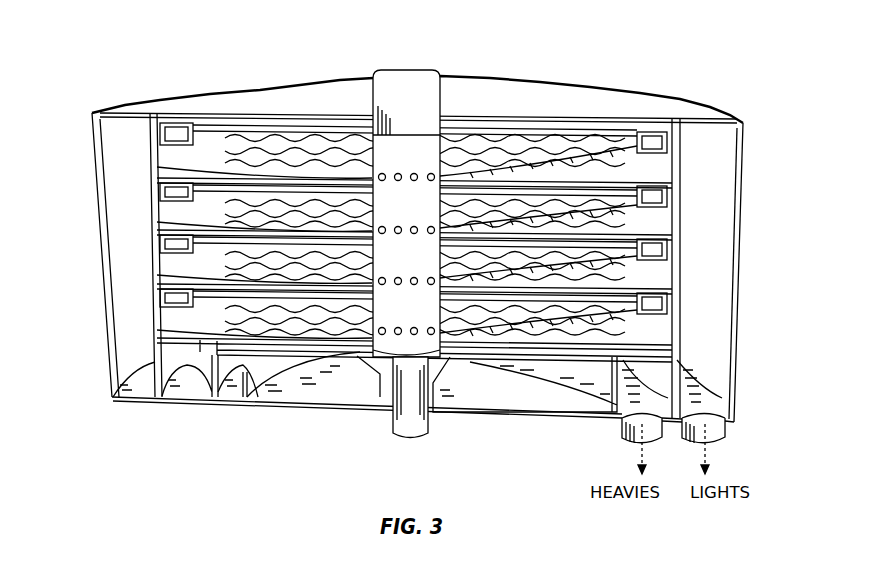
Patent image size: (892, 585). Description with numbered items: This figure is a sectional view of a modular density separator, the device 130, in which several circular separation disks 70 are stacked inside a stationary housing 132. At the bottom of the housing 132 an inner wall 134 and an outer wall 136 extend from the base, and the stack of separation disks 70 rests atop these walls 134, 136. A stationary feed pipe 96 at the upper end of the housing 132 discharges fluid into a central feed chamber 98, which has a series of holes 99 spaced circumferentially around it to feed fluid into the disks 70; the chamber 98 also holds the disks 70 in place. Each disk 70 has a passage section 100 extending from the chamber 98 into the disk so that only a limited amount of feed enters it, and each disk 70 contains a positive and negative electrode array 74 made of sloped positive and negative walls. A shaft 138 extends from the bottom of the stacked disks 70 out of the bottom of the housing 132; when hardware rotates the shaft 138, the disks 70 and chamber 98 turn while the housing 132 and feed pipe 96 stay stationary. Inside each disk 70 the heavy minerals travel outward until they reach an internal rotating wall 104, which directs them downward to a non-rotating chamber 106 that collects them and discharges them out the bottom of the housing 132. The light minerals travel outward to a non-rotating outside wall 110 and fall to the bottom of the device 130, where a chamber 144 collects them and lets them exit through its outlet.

The device 130 is at (153, 34).
The stationary feed pipe 96 is at (377, 85).
The feed chamber 98 is at (389, 163).
The holes 99 is at (395, 223).
The passage section 100 is at (466, 150).
The positive and negative electrode array 74 is at (200, 144).
The internal rotating wall 104 is at (150, 205).
The circular separation disks 70 is at (681, 178).
The stationary housing 132 is at (744, 190).
The non-rotating outside wall 110 is at (735, 236).
The chamber 144 is at (697, 400).
The non-rotating chamber 106 is at (590, 391).
The outer wall 136 is at (187, 388).
The inner wall 134 is at (243, 392).
The shaft 138 is at (393, 422).